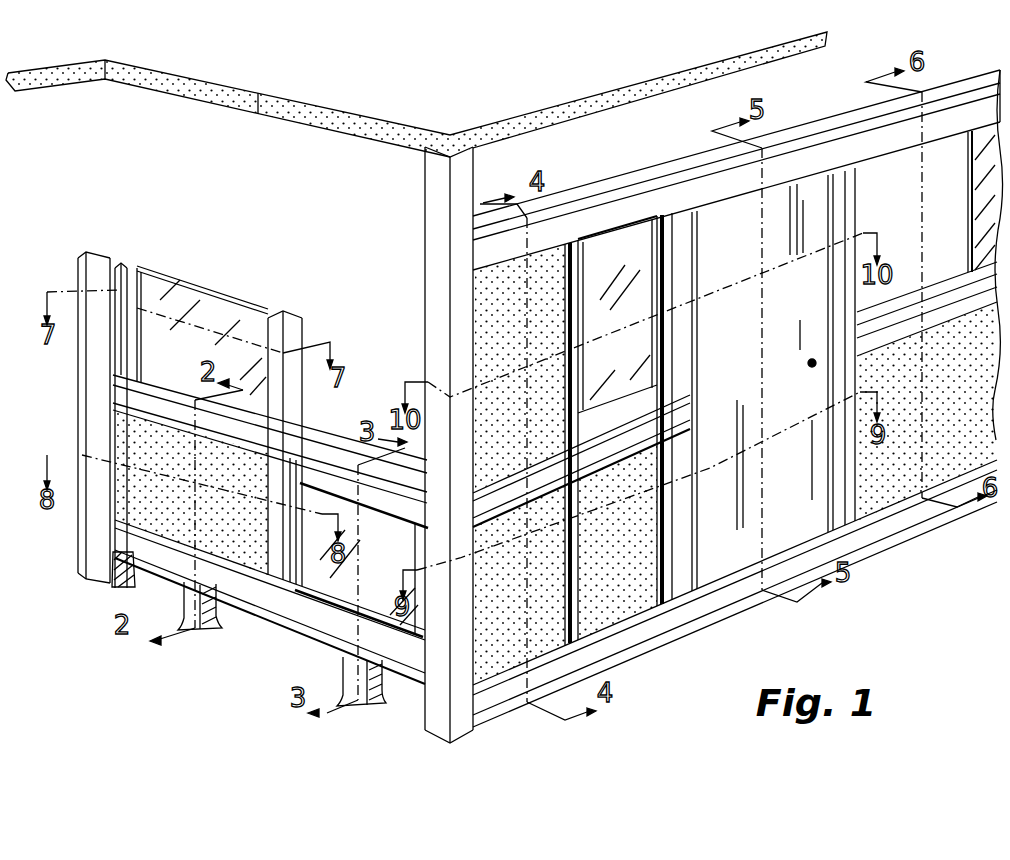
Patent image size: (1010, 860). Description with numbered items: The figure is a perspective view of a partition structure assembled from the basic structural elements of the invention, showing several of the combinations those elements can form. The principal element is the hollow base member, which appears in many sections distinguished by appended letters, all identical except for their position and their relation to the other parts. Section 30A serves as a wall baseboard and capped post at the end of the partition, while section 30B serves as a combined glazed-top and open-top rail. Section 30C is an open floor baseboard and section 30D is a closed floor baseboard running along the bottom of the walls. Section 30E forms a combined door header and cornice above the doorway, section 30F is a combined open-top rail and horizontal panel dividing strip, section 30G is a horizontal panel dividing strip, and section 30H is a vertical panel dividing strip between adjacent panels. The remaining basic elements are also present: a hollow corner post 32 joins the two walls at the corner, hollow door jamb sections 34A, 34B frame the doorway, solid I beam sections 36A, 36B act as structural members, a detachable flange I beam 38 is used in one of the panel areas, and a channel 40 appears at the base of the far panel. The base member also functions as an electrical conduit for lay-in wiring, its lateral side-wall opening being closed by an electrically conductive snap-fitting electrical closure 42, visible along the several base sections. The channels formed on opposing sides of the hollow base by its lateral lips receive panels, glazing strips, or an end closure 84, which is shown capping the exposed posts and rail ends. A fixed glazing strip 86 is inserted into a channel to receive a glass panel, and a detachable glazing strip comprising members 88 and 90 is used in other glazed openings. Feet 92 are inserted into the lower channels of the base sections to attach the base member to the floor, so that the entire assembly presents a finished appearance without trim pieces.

The base member section A 30A is at (78, 418).
The base member section B 30B is at (137, 420).
The base member section C 30C is at (252, 612).
The base member section D 30D is at (506, 712).
The base member section E 30E is at (616, 202).
The base member section F 30F is at (935, 326).
The base member section G 30G is at (590, 516).
The base member section H 30H is at (256, 490).
The hollow corner post 32 is at (425, 238).
The hollow door jamb section 34A is at (674, 624).
The hollow door jamb section 34B is at (848, 536).
The solid I beam section 36A is at (280, 314).
The solid I beam section 36B is at (584, 304).
The detachable flange I beam 38 is at (584, 590).
The channel 40 is at (966, 476).
The electrical closure 42 is at (82, 372).
The end closure 84 is at (424, 184).
The fixed glazing strip 86 is at (136, 310).
The detachable glazing strip member 88 is at (631, 357).
The detachable glazing strip member 90 is at (381, 582).
The foot 92 is at (182, 616).